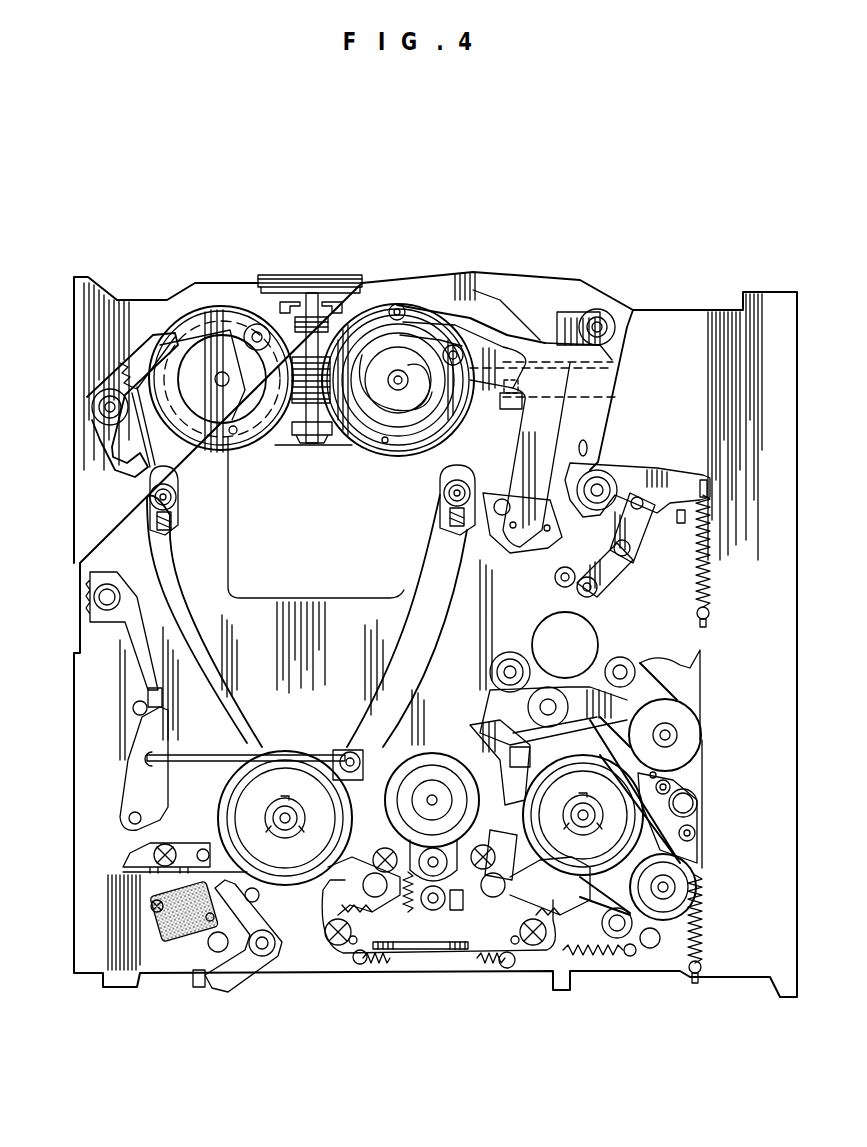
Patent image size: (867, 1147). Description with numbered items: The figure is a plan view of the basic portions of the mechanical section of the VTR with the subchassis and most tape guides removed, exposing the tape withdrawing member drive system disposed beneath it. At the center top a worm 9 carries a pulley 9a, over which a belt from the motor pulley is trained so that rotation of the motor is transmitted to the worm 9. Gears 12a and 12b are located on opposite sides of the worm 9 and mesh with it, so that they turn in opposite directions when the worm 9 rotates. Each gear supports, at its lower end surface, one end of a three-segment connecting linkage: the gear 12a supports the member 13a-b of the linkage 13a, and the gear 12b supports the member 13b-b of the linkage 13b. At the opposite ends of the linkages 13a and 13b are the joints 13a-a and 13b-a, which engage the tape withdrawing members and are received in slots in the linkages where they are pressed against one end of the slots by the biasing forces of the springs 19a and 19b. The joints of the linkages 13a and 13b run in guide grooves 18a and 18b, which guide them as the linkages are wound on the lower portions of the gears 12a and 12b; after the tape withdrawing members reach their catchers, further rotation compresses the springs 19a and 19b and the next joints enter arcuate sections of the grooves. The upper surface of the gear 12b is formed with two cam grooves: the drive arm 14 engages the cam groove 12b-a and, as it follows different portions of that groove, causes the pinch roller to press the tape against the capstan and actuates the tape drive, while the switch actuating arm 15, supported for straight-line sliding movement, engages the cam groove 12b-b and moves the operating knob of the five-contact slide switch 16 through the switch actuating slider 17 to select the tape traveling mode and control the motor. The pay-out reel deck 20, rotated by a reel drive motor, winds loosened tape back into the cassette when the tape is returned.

The worm 9 is at (295, 348).
The pulley 9a is at (312, 277).
The gear 12a is at (193, 300).
The gear 12b is at (380, 300).
The cam groove 12b-a is at (420, 305).
The cam groove 12b-b is at (410, 330).
The three-segment connecting linkage 13a is at (170, 480).
The joint 13a-a is at (152, 503).
The member 13a-b is at (235, 434).
The three-segment connecting linkage 13b is at (430, 473).
The joint 13b-a is at (440, 508).
The member 13b-b is at (385, 443).
The drive arm 14 is at (580, 300).
The switch actuating arm 15 is at (503, 298).
The five-contact slide switch 16 is at (503, 398).
The switch actuating slider 17 is at (567, 319).
The guide groove 18a is at (176, 606).
The guide groove 18b is at (420, 578).
The spring 19a is at (180, 515).
The spring 19b is at (440, 518).
The pay-out reel deck 20 is at (263, 750).